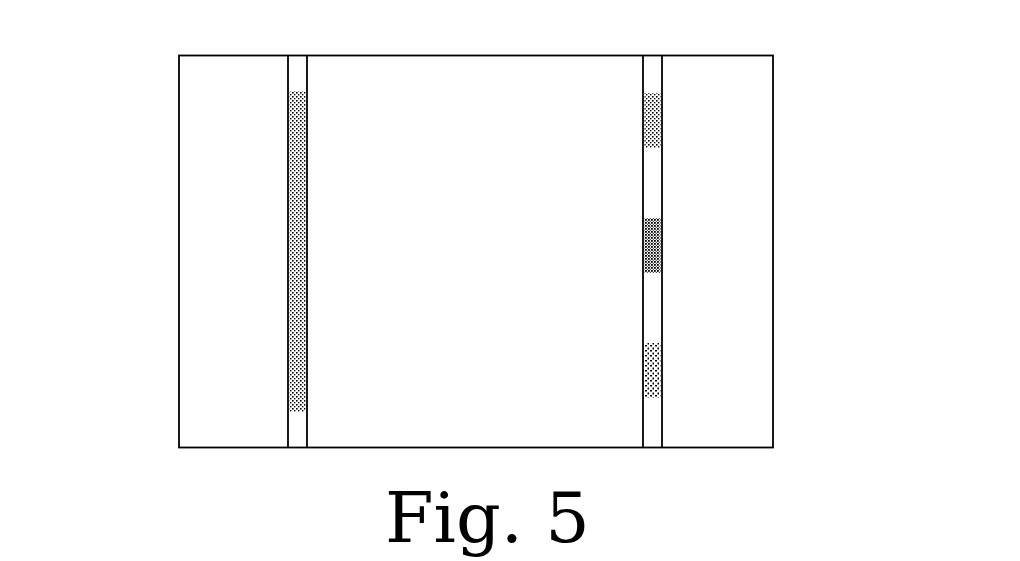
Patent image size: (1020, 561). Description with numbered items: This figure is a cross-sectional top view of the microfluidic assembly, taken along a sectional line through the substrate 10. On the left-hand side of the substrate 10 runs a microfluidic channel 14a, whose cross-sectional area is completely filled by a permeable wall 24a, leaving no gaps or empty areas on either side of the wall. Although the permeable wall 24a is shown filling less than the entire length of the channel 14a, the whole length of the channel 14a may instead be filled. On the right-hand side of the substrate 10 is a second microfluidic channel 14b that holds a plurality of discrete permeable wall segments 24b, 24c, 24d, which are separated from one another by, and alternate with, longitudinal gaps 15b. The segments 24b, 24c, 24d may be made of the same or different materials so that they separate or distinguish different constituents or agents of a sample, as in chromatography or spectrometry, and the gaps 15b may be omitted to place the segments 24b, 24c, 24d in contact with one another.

The substrate 10 is at (215, 200).
The microfluidic channel 14a is at (288, 432).
The microfluidic channel 14b is at (662, 80).
The longitudinal gaps 15b is at (662, 193).
The permeable wall 24a is at (288, 112).
The discrete permeable wall segment 24b is at (662, 133).
The discrete permeable wall segment 24c is at (662, 258).
The discrete permeable wall segment 24d is at (662, 382).